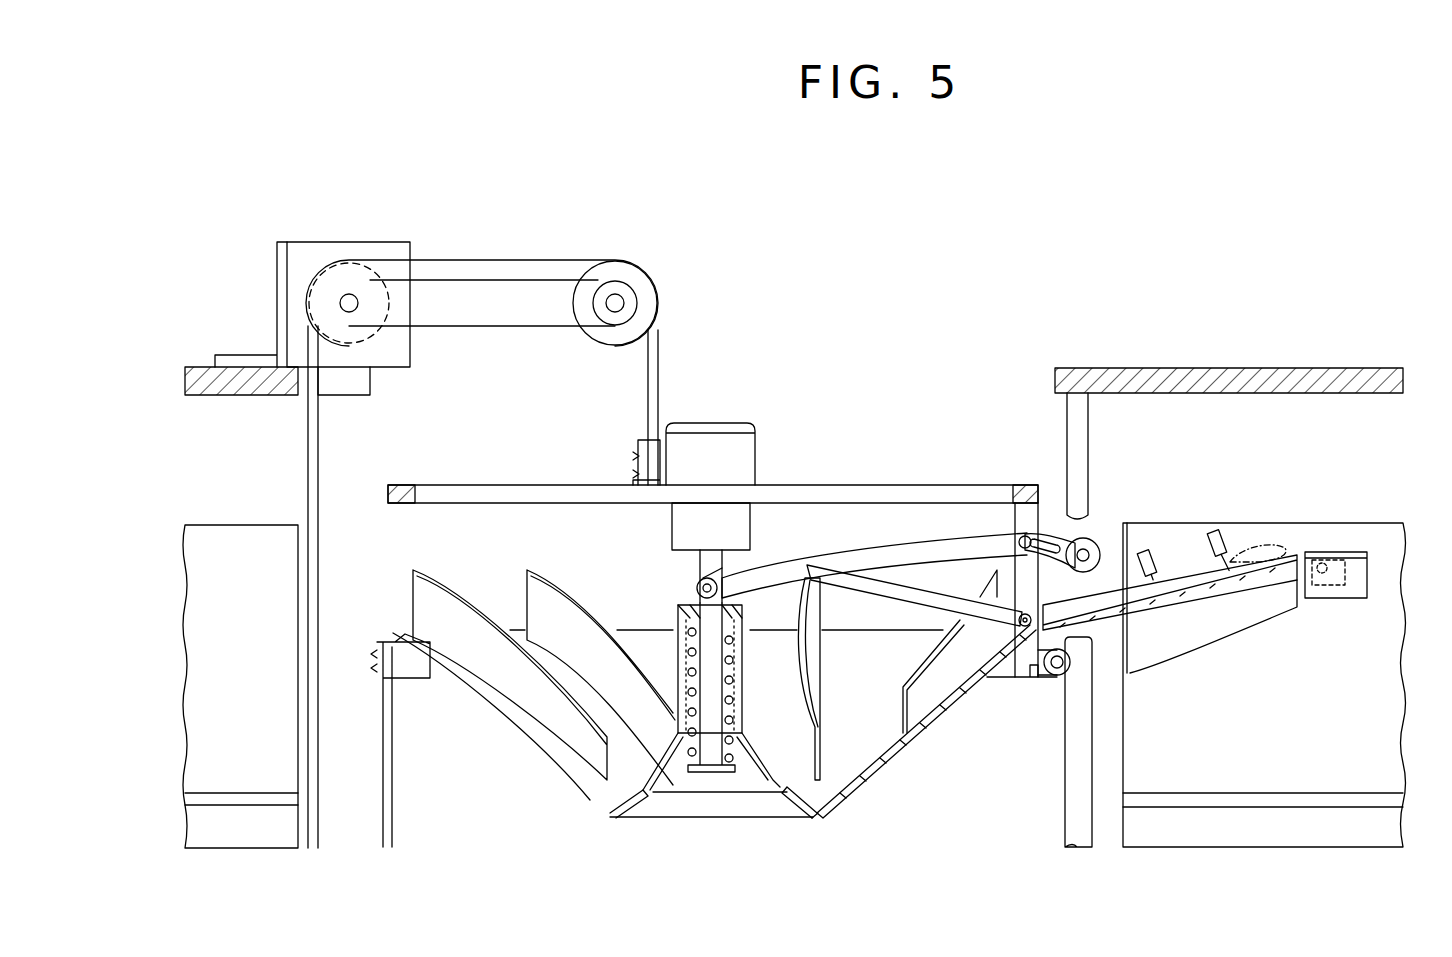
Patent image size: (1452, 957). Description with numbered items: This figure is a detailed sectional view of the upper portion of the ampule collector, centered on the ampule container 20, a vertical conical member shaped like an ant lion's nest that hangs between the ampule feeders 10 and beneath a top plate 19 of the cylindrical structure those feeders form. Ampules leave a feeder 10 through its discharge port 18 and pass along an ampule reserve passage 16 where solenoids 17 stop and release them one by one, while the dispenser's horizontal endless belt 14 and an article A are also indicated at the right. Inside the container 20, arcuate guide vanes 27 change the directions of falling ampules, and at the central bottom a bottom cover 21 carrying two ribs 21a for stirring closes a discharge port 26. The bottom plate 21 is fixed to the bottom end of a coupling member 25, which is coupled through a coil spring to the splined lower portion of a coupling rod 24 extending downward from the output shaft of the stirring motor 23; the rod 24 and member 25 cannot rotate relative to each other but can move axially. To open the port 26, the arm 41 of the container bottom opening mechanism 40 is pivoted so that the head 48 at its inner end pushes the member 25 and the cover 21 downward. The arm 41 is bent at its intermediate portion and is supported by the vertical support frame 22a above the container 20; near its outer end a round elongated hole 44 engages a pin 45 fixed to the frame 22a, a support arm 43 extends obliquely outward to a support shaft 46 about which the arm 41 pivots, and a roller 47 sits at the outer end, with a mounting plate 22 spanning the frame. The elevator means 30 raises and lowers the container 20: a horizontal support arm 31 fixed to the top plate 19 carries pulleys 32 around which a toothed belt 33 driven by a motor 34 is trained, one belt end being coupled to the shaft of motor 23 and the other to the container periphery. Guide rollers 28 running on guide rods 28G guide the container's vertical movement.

The ampule feeder 10 is at (192, 522).
The horizontal endless belt 14 is at (1352, 552).
The ampule reserve passage 16 is at (1185, 597).
The solenoid 17 is at (1218, 540).
The discharge port 18 is at (1088, 605).
The top plate 19 is at (202, 367).
The ampule container 20 is at (897, 748).
The bottom cover 21 is at (780, 800).
The rib 21a is at (813, 795).
The support frame 22 is at (893, 485).
The vertical support frame 22a is at (1013, 517).
The motor 23 is at (725, 442).
The coupling rod 24 is at (710, 583).
The coupling member 25 is at (680, 615).
The discharge port 26 is at (818, 818).
The arcuate guide vane 27 is at (905, 690).
The guide roller 28 is at (1057, 680).
The guide rod 28G is at (1068, 813).
The elevator means 30 is at (500, 250).
The horizontal support arm 31 is at (535, 277).
The pulley 32 is at (345, 268).
The toothed belt 33 is at (657, 360).
The motor 34 is at (397, 240).
The container bottom opening mechanism 40 is at (963, 525).
The arm 41 is at (928, 535).
The support arm 43 is at (905, 605).
The round elongated hole 44 is at (1047, 548).
The pin 45 is at (1028, 540).
The support shaft 46 is at (1020, 636).
The roller 47 is at (1097, 540).
The head 48 is at (700, 587).
The article A is at (1275, 550).